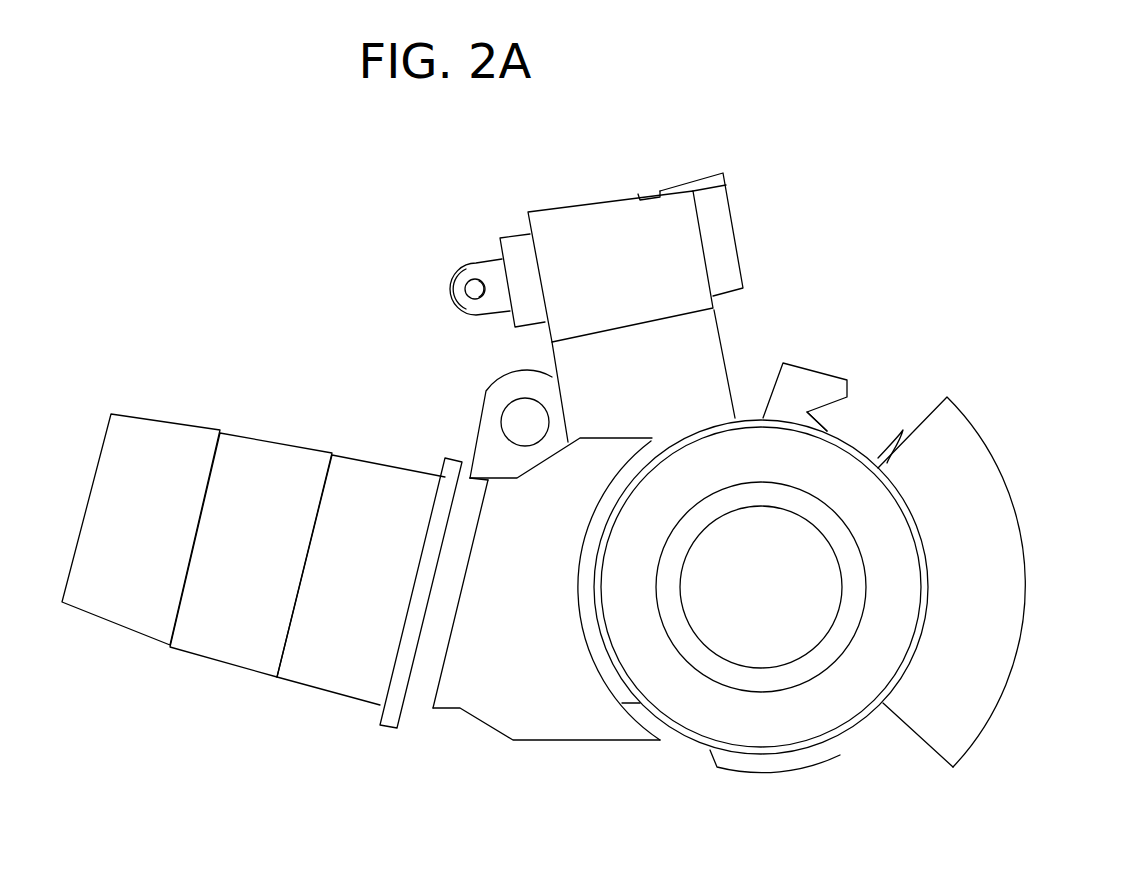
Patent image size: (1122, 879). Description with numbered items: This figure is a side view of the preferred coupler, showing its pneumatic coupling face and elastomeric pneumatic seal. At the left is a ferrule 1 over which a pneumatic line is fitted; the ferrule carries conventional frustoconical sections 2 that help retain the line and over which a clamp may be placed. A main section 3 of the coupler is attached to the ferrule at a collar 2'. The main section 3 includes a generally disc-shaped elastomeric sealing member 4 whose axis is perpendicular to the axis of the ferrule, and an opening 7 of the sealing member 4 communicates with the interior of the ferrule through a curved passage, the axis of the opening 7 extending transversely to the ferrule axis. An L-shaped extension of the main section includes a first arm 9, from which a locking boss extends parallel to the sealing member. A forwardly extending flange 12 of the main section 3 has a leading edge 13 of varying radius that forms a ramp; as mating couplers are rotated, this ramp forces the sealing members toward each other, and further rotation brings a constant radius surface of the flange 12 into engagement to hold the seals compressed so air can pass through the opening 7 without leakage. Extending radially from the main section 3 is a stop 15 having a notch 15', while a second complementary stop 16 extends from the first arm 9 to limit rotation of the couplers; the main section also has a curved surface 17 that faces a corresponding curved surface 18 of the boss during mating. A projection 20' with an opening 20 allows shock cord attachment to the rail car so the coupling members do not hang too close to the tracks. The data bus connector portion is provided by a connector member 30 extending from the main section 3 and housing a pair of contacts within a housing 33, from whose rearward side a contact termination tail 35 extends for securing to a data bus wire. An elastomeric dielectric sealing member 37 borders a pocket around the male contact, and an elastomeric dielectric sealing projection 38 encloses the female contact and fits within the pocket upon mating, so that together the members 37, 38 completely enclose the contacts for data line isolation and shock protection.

The ferrule 1 is at (202, 680).
The frustoconical sections 2 is at (253, 530).
The collar 2' is at (409, 630).
The main section 3 is at (873, 314).
The elastomeric sealing member 4 is at (770, 680).
The opening 7 is at (760, 625).
The first arm 9 is at (515, 700).
The flange 12 is at (983, 673).
The leading edge 13 is at (943, 725).
The stop 15 is at (805, 364).
The notch 15' is at (863, 399).
The second complementary stop 16 is at (590, 452).
The curved surface 17 is at (910, 440).
The curved surface 18 is at (598, 665).
The opening 20 is at (478, 417).
The projection 20' is at (441, 450).
The connector member 30 is at (587, 370).
The housing 33 is at (617, 230).
The contact termination tail 35 is at (475, 277).
The elastomeric dielectric sealing member 37 is at (717, 227).
The elastomeric dielectric sealing projection 38 is at (710, 187).